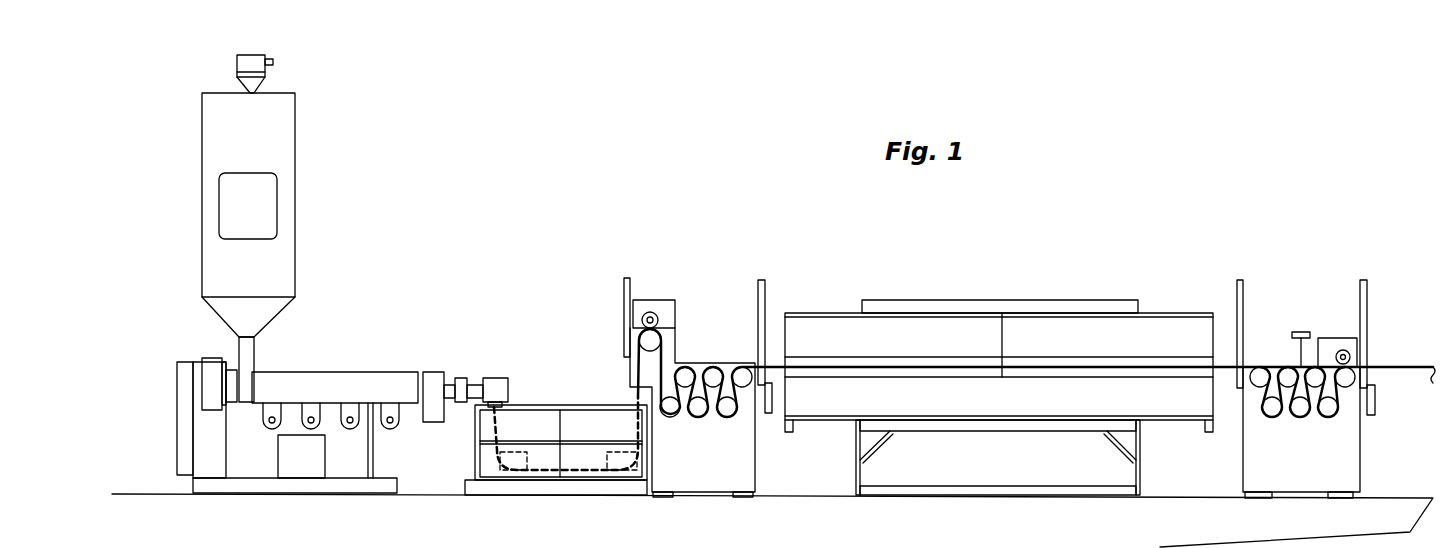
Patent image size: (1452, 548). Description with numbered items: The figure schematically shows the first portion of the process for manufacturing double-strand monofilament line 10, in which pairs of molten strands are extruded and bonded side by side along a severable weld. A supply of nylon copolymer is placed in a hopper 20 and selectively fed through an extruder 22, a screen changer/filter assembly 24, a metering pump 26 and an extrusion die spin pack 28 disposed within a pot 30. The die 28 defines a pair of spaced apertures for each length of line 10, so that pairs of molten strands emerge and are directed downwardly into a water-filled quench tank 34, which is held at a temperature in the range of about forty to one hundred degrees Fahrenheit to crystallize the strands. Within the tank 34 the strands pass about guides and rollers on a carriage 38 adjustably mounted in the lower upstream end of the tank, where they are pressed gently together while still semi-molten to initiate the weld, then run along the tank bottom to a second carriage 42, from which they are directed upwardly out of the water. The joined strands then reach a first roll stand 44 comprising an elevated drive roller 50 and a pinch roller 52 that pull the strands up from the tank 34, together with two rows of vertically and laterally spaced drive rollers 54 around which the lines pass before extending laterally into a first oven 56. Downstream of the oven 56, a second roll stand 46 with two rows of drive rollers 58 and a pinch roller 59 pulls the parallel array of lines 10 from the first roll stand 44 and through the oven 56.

The double-strand monofilament line 10 is at (578, 460).
The hopper 20 is at (295, 150).
The extruder 22 is at (340, 371).
The screen changer/filter assembly 24 is at (433, 370).
The metering pump 26 is at (463, 378).
The extrusion die spin pack 28 is at (503, 381).
The pot 30 is at (495, 380).
The quench tank 34 is at (548, 407).
The carriage 38 is at (520, 450).
The second carriage 42 is at (597, 450).
The first roll stand 44 is at (755, 450).
The second roll stand 46 is at (1358, 440).
The drive roller 50 is at (661, 335).
The pinch roller 52 is at (653, 314).
The drive rollers 54 is at (738, 370).
The first oven 56 is at (838, 328).
The drive rollers 58 is at (1320, 372).
The pinch roller 59 is at (1341, 350).